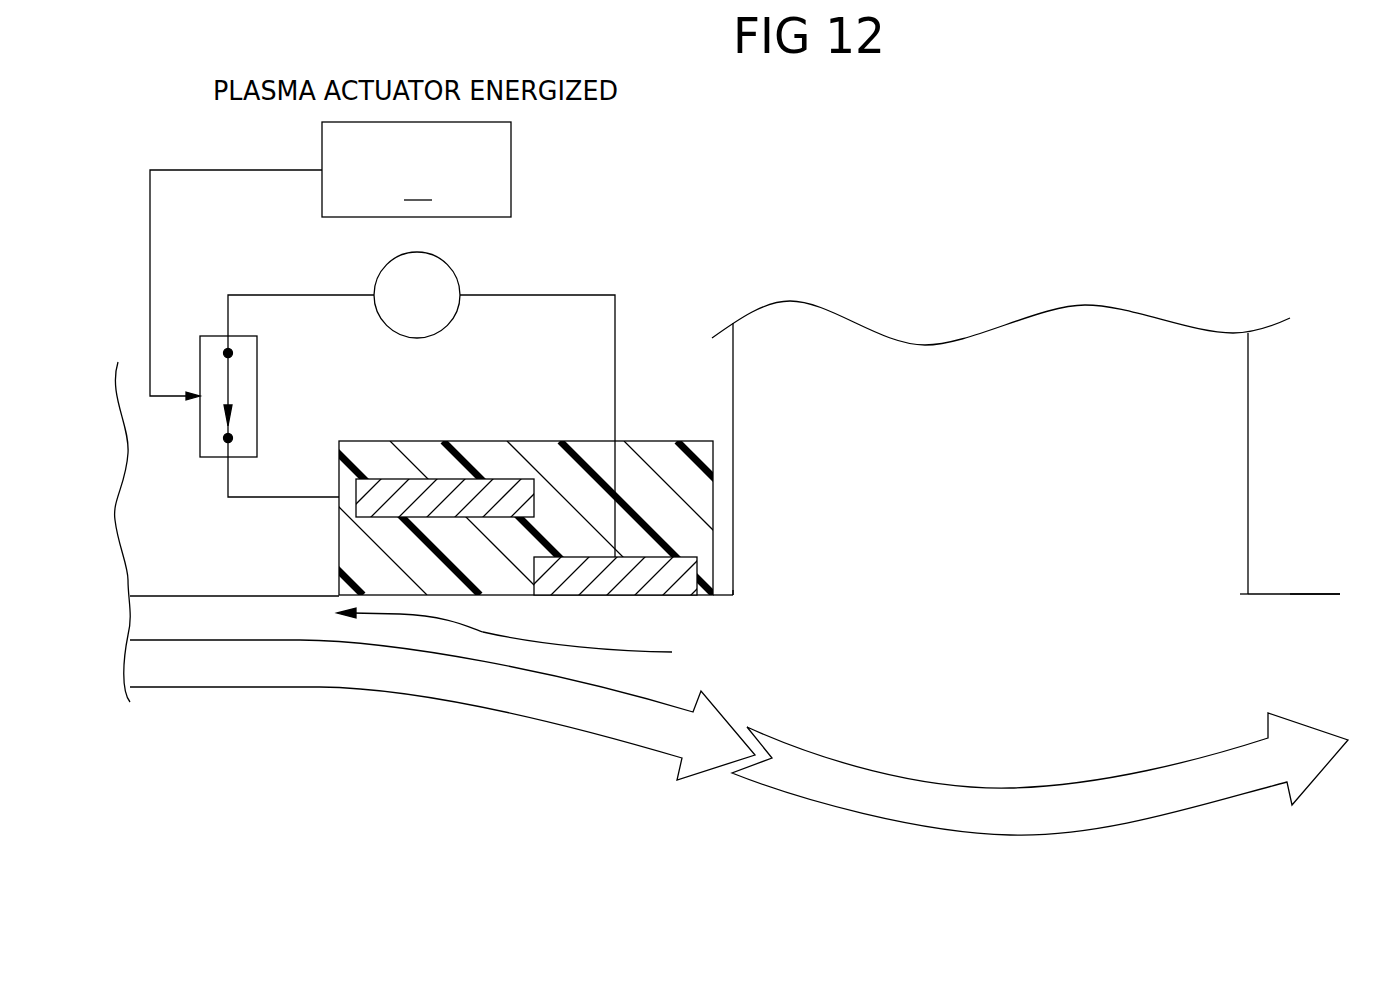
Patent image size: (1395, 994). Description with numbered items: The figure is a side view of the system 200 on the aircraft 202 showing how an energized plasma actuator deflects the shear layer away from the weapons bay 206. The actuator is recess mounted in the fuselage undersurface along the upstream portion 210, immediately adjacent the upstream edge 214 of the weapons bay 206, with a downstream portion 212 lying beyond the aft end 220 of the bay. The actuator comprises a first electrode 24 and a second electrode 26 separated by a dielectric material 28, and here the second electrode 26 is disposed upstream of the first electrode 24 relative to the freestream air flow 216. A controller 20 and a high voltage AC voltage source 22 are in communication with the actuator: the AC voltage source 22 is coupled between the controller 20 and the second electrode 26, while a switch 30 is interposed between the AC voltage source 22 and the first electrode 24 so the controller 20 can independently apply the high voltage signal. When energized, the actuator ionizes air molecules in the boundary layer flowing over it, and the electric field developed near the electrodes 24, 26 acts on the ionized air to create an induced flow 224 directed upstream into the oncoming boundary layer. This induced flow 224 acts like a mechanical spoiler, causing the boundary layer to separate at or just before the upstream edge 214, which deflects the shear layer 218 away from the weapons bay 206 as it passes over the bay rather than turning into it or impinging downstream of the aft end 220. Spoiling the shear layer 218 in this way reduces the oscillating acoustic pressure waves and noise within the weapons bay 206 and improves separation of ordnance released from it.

The controller 20 is at (416, 169).
The AC voltage source 22 is at (454, 273).
The first electrode 24 is at (655, 581).
The second electrode 26 is at (388, 508).
The dielectric material 28 is at (423, 448).
The switch 30 is at (257, 370).
The system 200 is at (651, 366).
The aircraft 202 is at (1290, 568).
The weapons bay 206 is at (1011, 480).
The upstream portion 210 is at (722, 598).
The downstream portion 212 is at (1273, 594).
The upstream edge 214 is at (752, 595).
The freestream air flow 216 is at (441, 683).
The shear layer 218 is at (1045, 825).
The aft end 220 is at (1240, 594).
The induced flow 224 is at (483, 630).